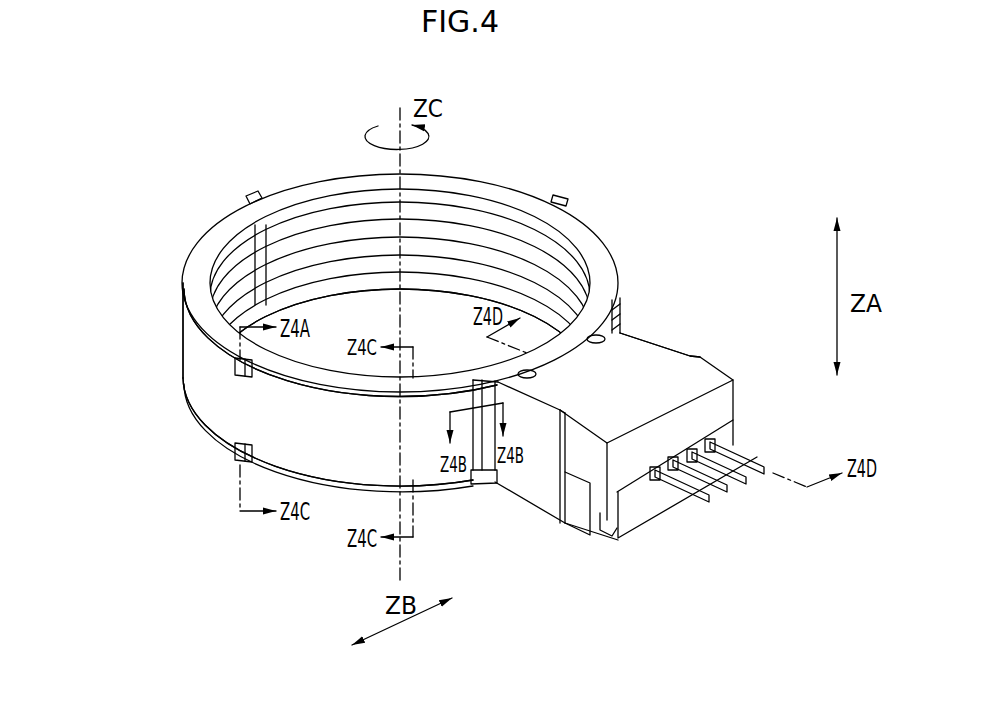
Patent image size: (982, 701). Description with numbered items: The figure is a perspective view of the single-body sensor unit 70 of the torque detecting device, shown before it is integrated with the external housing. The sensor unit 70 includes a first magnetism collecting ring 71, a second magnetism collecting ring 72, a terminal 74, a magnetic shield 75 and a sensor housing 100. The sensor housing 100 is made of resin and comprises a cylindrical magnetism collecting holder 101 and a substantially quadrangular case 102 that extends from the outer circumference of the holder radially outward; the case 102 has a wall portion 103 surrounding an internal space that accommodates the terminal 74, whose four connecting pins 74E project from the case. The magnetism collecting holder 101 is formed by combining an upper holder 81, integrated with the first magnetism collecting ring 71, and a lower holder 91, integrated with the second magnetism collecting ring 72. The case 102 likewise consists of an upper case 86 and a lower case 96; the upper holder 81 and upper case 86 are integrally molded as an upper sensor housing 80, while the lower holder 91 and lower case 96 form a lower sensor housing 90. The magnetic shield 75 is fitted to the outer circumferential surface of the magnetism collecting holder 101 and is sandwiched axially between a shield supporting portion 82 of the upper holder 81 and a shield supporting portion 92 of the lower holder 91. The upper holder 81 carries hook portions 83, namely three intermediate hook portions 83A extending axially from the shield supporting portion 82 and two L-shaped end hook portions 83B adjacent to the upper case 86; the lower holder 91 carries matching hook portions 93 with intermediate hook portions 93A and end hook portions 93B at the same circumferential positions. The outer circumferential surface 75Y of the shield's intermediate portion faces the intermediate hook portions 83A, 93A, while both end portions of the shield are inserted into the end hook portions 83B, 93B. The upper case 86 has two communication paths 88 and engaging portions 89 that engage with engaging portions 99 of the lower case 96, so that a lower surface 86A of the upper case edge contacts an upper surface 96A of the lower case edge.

The sensor unit 70 is at (90, 166).
The first magnetism collecting ring 71 is at (452, 207).
The second magnetism collecting ring 72 is at (368, 263).
The terminal 74 is at (780, 460).
The connecting pins 74E is at (770, 472).
The magnetic shield 75 is at (203, 393).
The outer circumferential surface 75Y is at (186, 372).
The upper sensor housing 80 is at (743, 390).
The upper holder 81 is at (338, 180).
The shield supporting portion 82 is at (183, 318).
The hook portions 83 is at (222, 168).
The intermediate hook portions 83A is at (250, 200).
The end hook portions 83B is at (480, 380).
The upper case 86 is at (645, 346).
The lower surface 86A is at (548, 460).
The communication paths 88 is at (537, 375).
The engaging portions 89 is at (605, 535).
The lower sensor housing 90 is at (683, 545).
The lower holder 91 is at (335, 298).
The shield supporting portion 92 is at (213, 437).
The hook portions 93 is at (165, 505).
The intermediate hook portions 93A is at (236, 455).
The end hook portions 93B is at (477, 483).
The lower case 96 is at (550, 505).
The upper surface 96A is at (540, 448).
The engaging portions 99 is at (627, 530).
The sensor housing 100 is at (182, 226).
The magnetism collecting holder 101 is at (181, 268).
The case 102 is at (712, 363).
The wall portion 103 is at (683, 510).